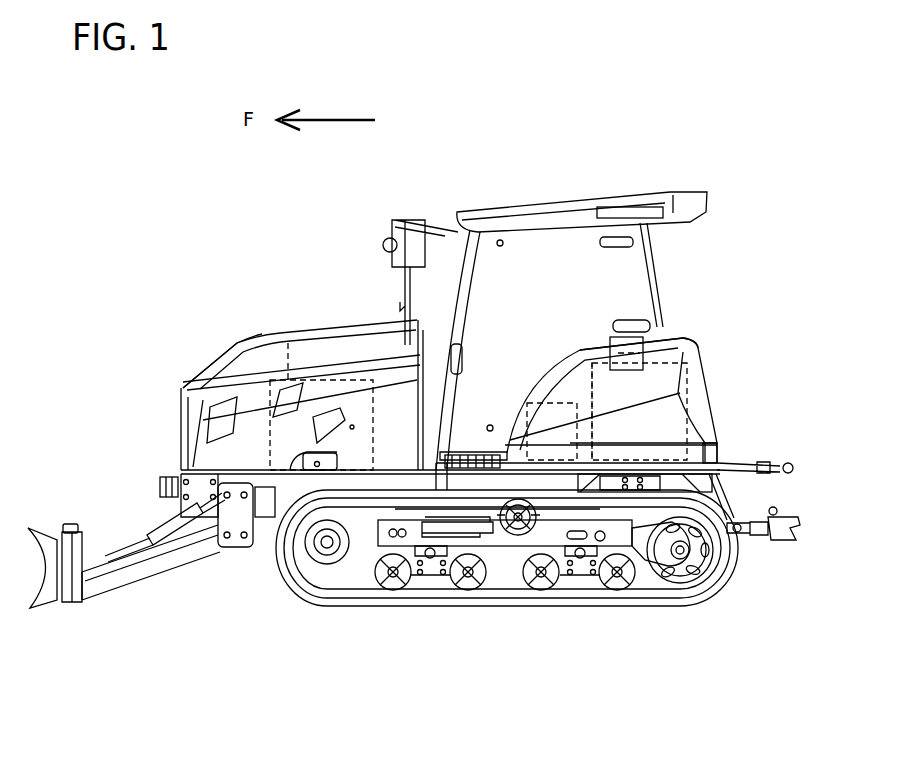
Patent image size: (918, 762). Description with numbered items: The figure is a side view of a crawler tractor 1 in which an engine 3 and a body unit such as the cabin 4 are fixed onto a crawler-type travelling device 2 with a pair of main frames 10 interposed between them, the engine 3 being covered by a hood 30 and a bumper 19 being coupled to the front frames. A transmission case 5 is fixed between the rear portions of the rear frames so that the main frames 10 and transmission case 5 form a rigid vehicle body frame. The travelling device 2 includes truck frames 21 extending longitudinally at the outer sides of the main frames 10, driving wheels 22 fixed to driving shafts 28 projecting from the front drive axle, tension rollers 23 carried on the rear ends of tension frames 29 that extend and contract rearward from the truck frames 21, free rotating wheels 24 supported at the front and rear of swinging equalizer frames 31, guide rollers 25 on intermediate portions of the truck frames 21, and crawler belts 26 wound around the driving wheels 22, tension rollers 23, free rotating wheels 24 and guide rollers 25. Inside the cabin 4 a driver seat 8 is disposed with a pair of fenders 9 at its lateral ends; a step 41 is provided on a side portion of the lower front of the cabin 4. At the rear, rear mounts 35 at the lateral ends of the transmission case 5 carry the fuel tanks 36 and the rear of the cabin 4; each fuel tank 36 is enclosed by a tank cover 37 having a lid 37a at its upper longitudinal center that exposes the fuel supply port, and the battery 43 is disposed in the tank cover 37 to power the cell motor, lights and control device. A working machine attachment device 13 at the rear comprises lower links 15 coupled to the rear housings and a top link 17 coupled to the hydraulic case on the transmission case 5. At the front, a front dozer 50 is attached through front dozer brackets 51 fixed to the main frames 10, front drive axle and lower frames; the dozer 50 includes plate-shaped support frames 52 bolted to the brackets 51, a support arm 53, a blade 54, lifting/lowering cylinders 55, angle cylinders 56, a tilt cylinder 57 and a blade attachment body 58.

The crawler tractor 1 is at (486, 62).
The crawler-type travelling device 2 is at (756, 566).
The engine 3 is at (280, 322).
The cabin 4 is at (600, 190).
The transmission case 5 is at (603, 460).
The driver seat 8 is at (640, 310).
The fenders 9 is at (572, 348).
The main frames 10 is at (200, 476).
The working machine attachment device 13 is at (766, 440).
The lower links 15 is at (758, 534).
The top link 17 is at (732, 463).
The bumper 19 is at (162, 478).
The truck frames 21 is at (488, 540).
The driving wheels 22 is at (372, 548).
The tension rollers 23 is at (645, 564).
The free rotating wheels 24 is at (403, 590).
The guide rollers 25 is at (510, 537).
The crawler belts 26 is at (697, 578).
The driving shafts 28 is at (325, 565).
The tension frames 29 is at (676, 560).
The hood 30 is at (223, 350).
The equalizer frames 31 is at (433, 567).
The rear mounts 35 is at (638, 470).
The fuel tanks 36 is at (690, 340).
The tank cover 37 is at (697, 410).
The lid 37a is at (617, 347).
The step 41 is at (468, 455).
The battery 43 is at (550, 400).
The front dozer 50 is at (118, 672).
The front dozer brackets 51 is at (262, 518).
The support frames 52 is at (240, 548).
The support arm 53 is at (128, 588).
The blade 54 is at (36, 526).
The lifting/lowering cylinders 55 is at (158, 533).
The angle cylinders 56 is at (107, 592).
The tilt cylinder 57 is at (71, 524).
The blade attachment body 58 is at (66, 605).